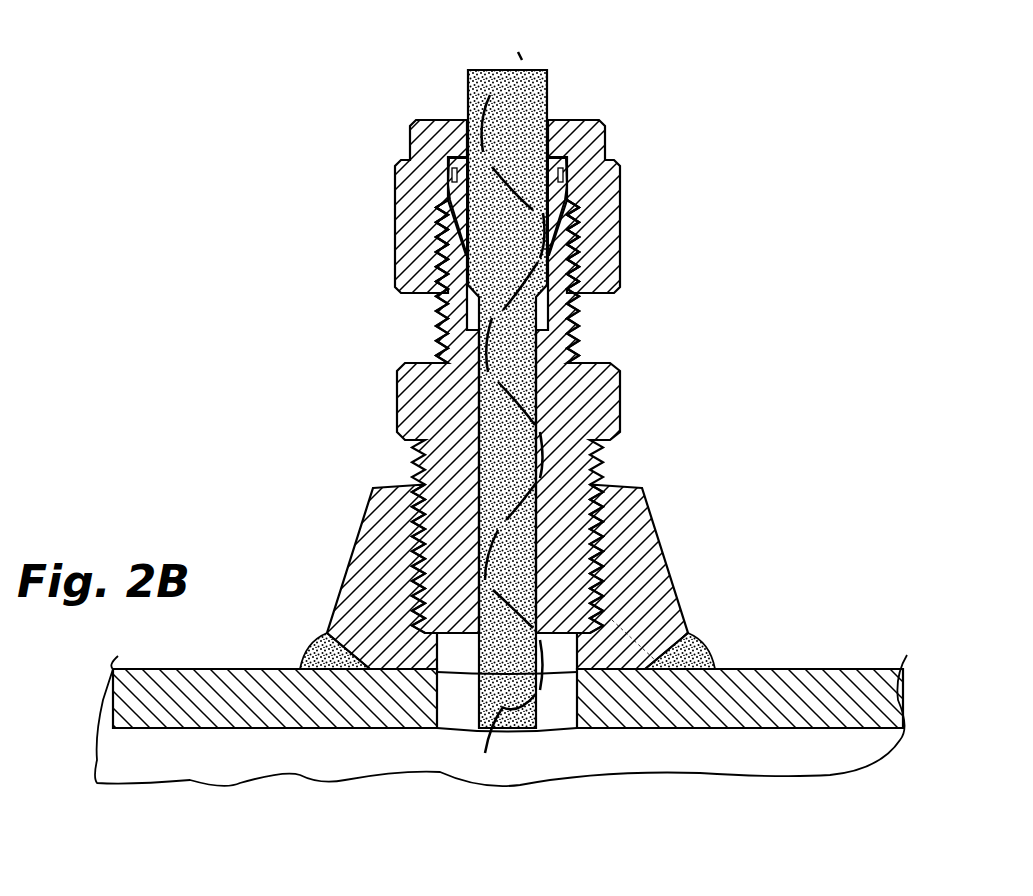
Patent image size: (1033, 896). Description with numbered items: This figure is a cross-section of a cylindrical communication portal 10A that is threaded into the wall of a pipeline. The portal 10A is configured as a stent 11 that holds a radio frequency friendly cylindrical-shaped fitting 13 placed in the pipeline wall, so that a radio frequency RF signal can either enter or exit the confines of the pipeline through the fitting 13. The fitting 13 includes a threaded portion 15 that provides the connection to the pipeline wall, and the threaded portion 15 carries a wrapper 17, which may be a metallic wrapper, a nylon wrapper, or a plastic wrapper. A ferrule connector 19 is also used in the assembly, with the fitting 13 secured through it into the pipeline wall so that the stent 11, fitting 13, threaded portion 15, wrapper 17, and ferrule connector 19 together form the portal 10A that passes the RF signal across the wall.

The portal 10A is at (451, 383).
The radio frequency signal RF is at (495, 93).
The stent 11 is at (622, 172).
The cylindrical-shaped fitting 13 is at (620, 377).
The threaded portion 15 is at (562, 273).
The wrapper 17 is at (460, 262).
The ferrule connector 19 is at (583, 540).